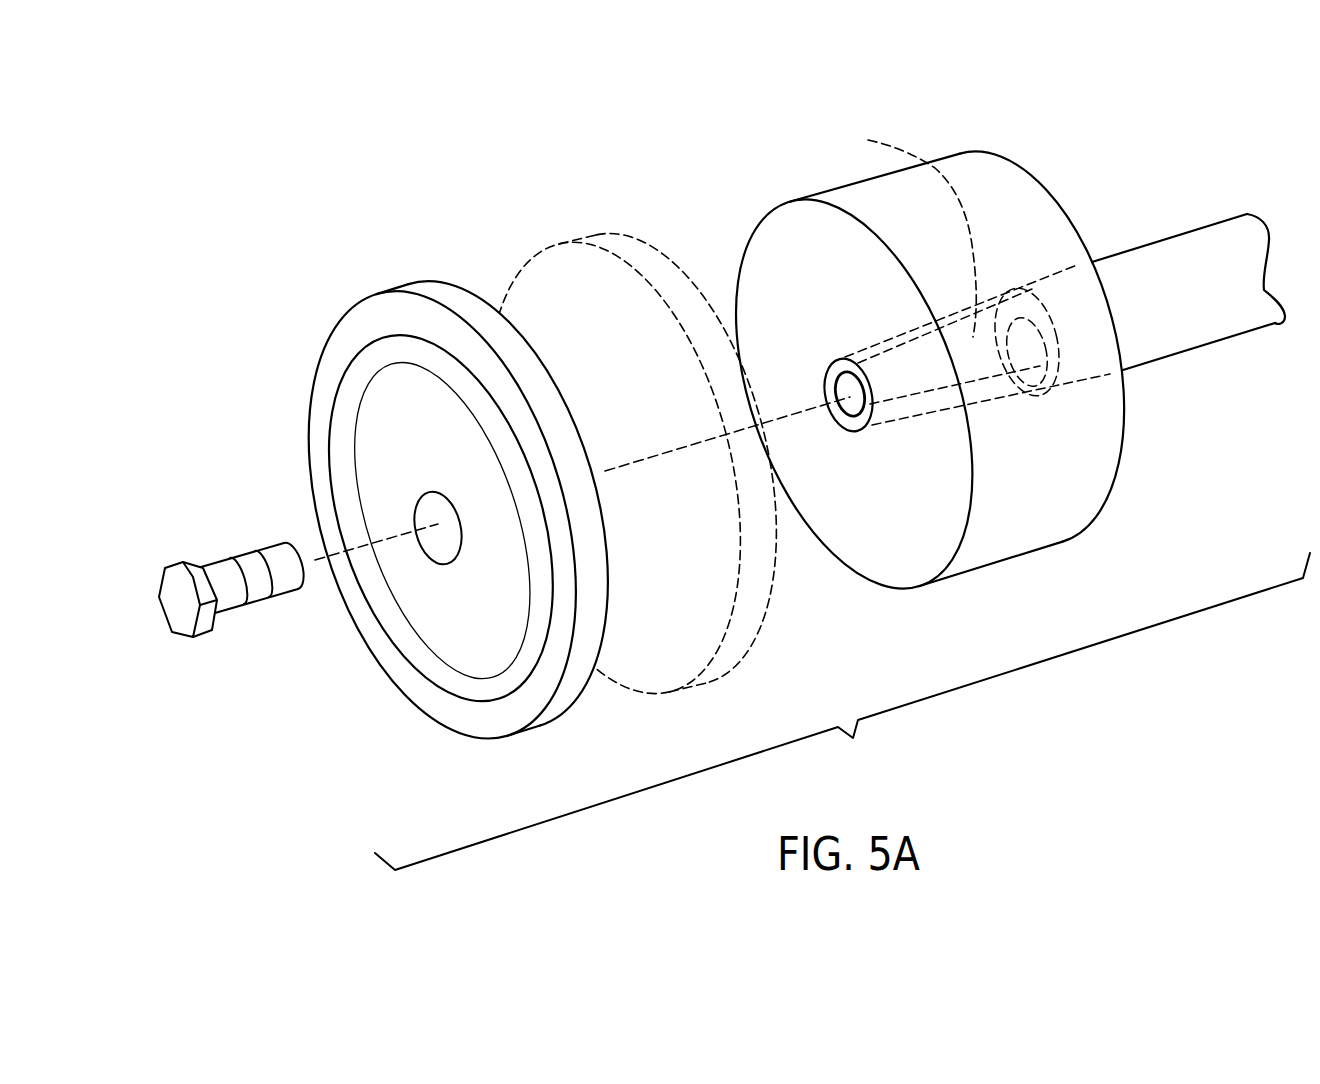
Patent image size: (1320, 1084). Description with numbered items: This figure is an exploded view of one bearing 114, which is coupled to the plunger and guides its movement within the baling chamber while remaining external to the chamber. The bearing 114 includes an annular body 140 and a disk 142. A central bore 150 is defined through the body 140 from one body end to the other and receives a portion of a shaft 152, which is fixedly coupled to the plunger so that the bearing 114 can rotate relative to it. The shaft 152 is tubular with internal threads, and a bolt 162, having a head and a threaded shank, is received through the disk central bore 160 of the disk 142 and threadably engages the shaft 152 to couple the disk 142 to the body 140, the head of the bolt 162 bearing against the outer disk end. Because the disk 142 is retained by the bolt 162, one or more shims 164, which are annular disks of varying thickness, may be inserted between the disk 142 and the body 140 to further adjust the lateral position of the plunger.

The bearing 114 is at (842, 542).
The body 140 is at (780, 272).
The disk 142 is at (318, 412).
The central bore 150 is at (1027, 287).
The shaft 152 is at (900, 228).
The disk central bore 160 is at (440, 545).
The bolt 162 is at (178, 598).
The shims 164 is at (537, 289).